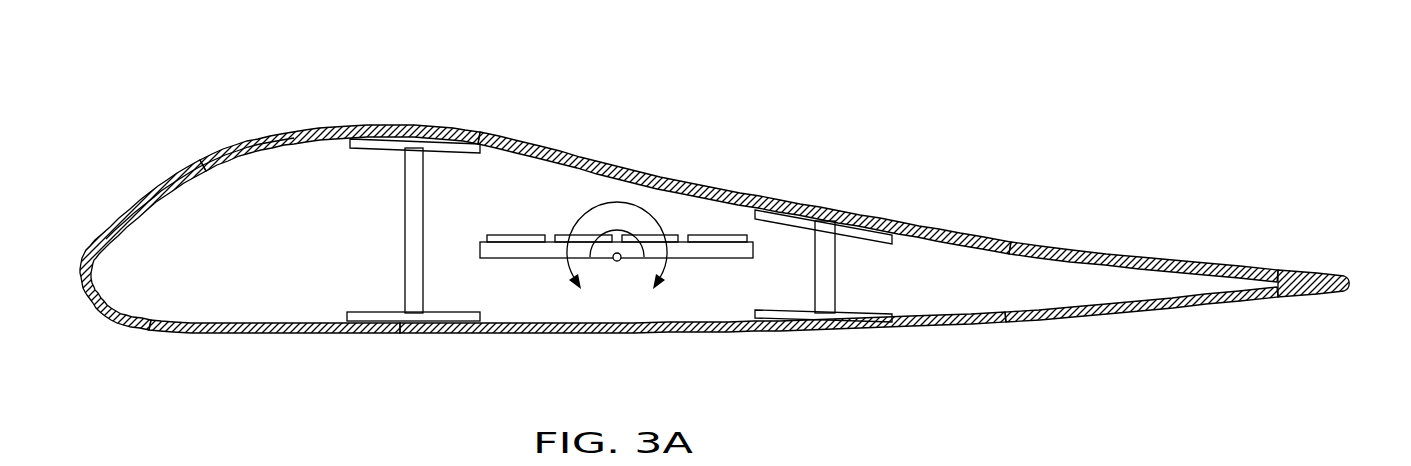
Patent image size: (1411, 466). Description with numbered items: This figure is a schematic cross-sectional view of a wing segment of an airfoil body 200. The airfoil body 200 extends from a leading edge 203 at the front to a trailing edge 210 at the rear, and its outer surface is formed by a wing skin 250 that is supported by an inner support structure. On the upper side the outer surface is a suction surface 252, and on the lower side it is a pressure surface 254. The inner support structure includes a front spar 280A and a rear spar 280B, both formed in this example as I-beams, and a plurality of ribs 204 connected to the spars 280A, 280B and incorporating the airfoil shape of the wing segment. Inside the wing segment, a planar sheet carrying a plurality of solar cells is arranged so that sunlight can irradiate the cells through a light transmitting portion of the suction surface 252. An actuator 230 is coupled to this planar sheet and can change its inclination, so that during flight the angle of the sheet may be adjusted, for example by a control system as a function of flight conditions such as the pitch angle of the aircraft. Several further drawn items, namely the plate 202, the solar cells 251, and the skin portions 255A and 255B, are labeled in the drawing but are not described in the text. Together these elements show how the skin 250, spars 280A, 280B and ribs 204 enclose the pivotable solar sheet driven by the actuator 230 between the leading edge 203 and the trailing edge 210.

The airfoil body 200 is at (1027, 140).
The support plate 202 is at (683, 248).
The leading edge 203 is at (153, 327).
The ribs 204 is at (1157, 288).
The trailing edge 210 is at (1348, 282).
The actuator 230 is at (615, 263).
The wing skin 250 is at (470, 137).
The solar cells 251 is at (710, 235).
The suction surface 252 is at (647, 160).
The pressure surface 254 is at (792, 358).
The leading edge skin layer 255A is at (117, 217).
The aft skin layer 255B is at (1083, 250).
The front spar 280A is at (410, 218).
The rear spar 280B is at (826, 230).